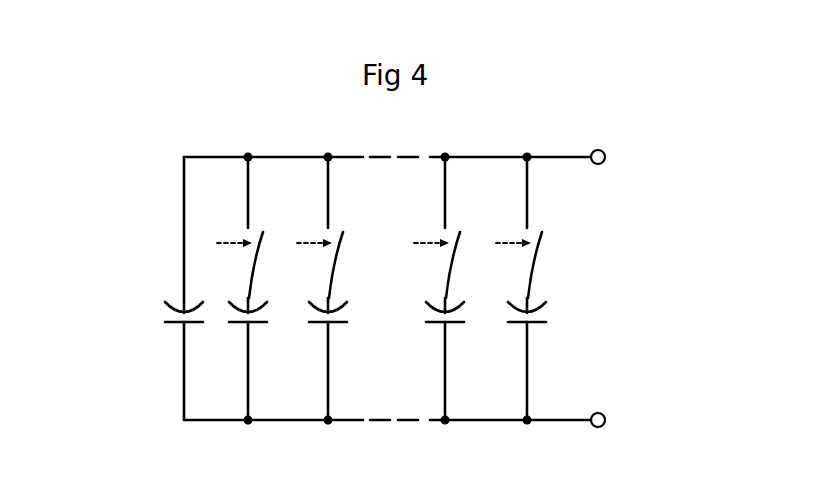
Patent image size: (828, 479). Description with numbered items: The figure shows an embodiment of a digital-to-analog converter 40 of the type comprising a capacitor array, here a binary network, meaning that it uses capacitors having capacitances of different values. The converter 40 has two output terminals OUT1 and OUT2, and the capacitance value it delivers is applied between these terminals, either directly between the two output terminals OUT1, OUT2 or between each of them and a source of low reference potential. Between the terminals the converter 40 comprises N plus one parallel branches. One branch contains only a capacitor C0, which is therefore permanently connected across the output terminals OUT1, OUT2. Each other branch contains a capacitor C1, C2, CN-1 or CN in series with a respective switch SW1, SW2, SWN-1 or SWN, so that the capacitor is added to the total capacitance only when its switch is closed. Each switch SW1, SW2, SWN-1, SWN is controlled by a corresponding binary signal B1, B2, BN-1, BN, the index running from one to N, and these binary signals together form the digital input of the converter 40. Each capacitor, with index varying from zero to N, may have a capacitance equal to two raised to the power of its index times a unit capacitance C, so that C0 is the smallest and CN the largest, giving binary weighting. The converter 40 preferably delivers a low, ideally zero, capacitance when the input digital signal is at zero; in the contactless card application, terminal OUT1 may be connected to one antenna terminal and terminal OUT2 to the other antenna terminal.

The digital-to-analog converter 40 is at (143, 257).
The capacitor C0 is at (172, 325).
The capacitor C1 is at (236, 325).
The capacitor C2 is at (316, 325).
The capacitor CN-1 is at (433, 325).
The capacitor CN is at (515, 325).
The switch SW1 is at (265, 239).
The switch SW2 is at (345, 239).
The switch SWN-1 is at (481, 221).
The switch SWN is at (544, 239).
The binary signal B1 is at (234, 244).
The binary signal B2 is at (314, 244).
The binary signal BN-1 is at (431, 244).
The binary signal BN is at (513, 244).
The output terminal OUT1 is at (601, 413).
The output terminal OUT2 is at (602, 163).